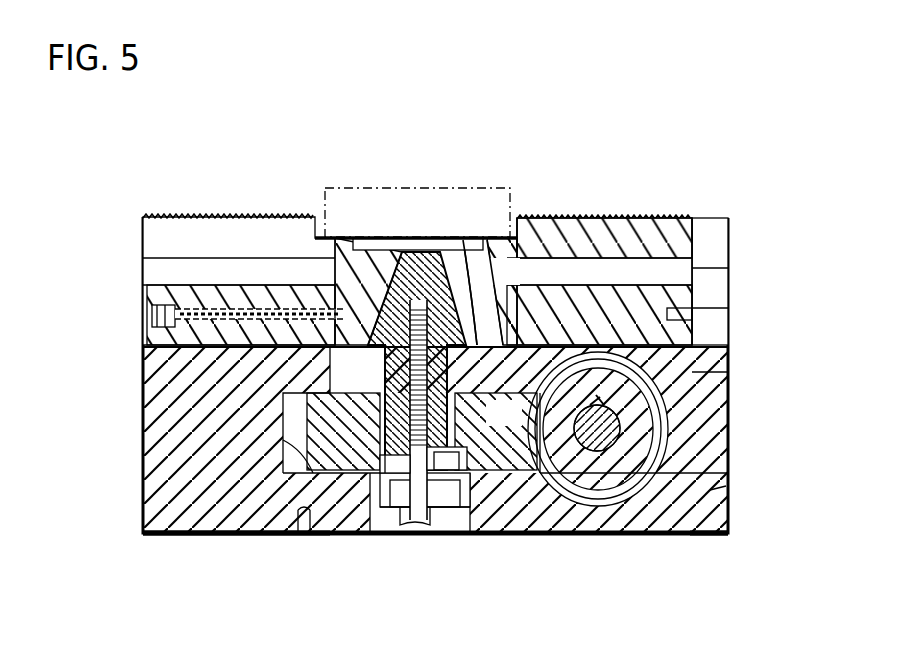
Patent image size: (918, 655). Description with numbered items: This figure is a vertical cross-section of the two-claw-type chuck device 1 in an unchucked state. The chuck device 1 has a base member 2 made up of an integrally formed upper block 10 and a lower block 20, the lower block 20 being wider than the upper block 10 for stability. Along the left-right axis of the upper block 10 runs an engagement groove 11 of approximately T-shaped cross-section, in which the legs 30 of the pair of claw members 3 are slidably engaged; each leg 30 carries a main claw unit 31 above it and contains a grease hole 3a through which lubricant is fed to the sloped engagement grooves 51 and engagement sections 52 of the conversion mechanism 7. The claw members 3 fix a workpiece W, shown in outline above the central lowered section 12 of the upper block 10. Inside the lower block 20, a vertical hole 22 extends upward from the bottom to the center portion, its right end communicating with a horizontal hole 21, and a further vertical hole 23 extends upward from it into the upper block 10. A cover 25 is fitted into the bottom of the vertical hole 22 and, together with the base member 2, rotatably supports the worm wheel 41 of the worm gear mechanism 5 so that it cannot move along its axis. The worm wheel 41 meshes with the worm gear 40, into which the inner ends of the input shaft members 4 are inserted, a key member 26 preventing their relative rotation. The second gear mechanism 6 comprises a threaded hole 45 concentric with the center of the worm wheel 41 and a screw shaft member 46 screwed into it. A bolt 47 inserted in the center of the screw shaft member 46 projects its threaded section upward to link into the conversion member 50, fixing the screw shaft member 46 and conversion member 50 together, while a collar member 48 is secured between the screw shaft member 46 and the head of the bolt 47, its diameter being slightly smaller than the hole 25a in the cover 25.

The chuck device 1 is at (165, 144).
The base member 2 is at (734, 413).
The claw member 3 is at (272, 200).
The grease hole 3a is at (157, 362).
The input shaft member 4 is at (590, 536).
The worm gear mechanism 5 is at (518, 533).
The second gear mechanism 6 is at (335, 538).
The conversion mechanism 7 is at (510, 270).
The upper block 10 is at (727, 280).
The engagement groove 11 is at (713, 325).
The lowered section 12 is at (446, 237).
The lower block 20 is at (710, 490).
The horizontal hole 21 is at (709, 536).
The vertical hole 22 is at (222, 537).
The vertical hole 23 is at (290, 367).
The cover 25 is at (360, 538).
The hole 25a is at (387, 538).
The key member 26 is at (722, 372).
The leg 30 is at (188, 285).
The main claw unit 31 is at (168, 216).
The worm gear 40 is at (632, 532).
The worm wheel 41 is at (497, 533).
The threaded hole 45 is at (470, 418).
The screw shaft member 46 is at (447, 538).
The bolt 47 is at (417, 538).
The collar member 48 is at (462, 538).
The conversion member 50 is at (418, 235).
The sloped engagement groove 51 is at (360, 310).
The engagement section 52 is at (370, 234).
The workpiece W is at (510, 190).